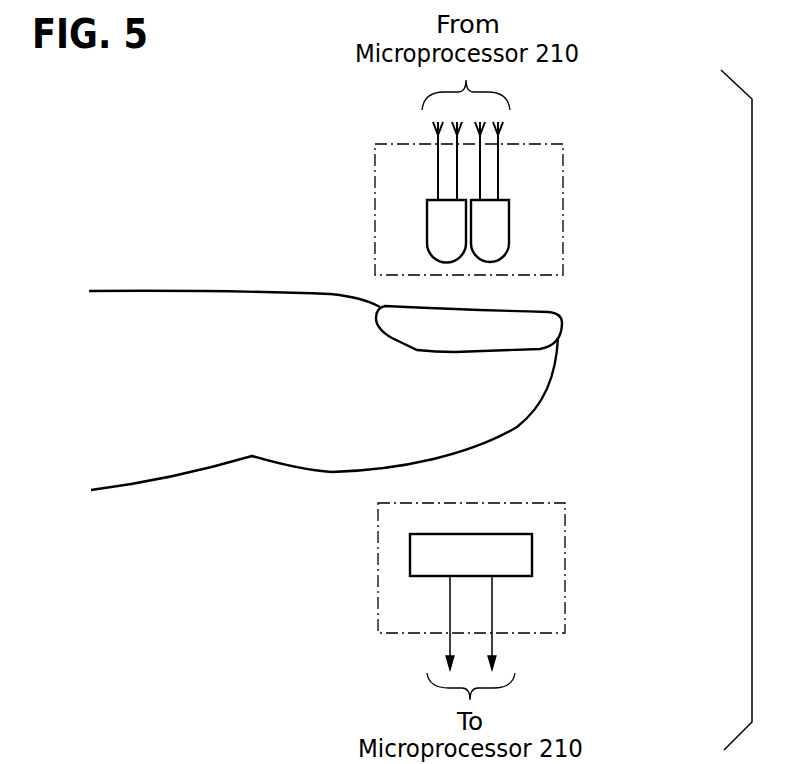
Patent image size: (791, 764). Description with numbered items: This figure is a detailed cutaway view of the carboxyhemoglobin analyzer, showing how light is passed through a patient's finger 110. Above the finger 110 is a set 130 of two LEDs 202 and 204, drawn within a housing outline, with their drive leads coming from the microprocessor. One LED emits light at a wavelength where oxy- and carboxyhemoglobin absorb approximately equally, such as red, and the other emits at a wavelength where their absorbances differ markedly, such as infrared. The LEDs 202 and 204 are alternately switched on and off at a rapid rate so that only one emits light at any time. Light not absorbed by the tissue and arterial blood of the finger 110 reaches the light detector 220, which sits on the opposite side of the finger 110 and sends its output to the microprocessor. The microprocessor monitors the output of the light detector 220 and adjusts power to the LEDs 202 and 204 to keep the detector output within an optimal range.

The finger 110 is at (530, 387).
The set of two LEDs 130 is at (556, 265).
The LED 202 is at (433, 208).
The LED 204 is at (503, 218).
The light detector 220 is at (437, 550).